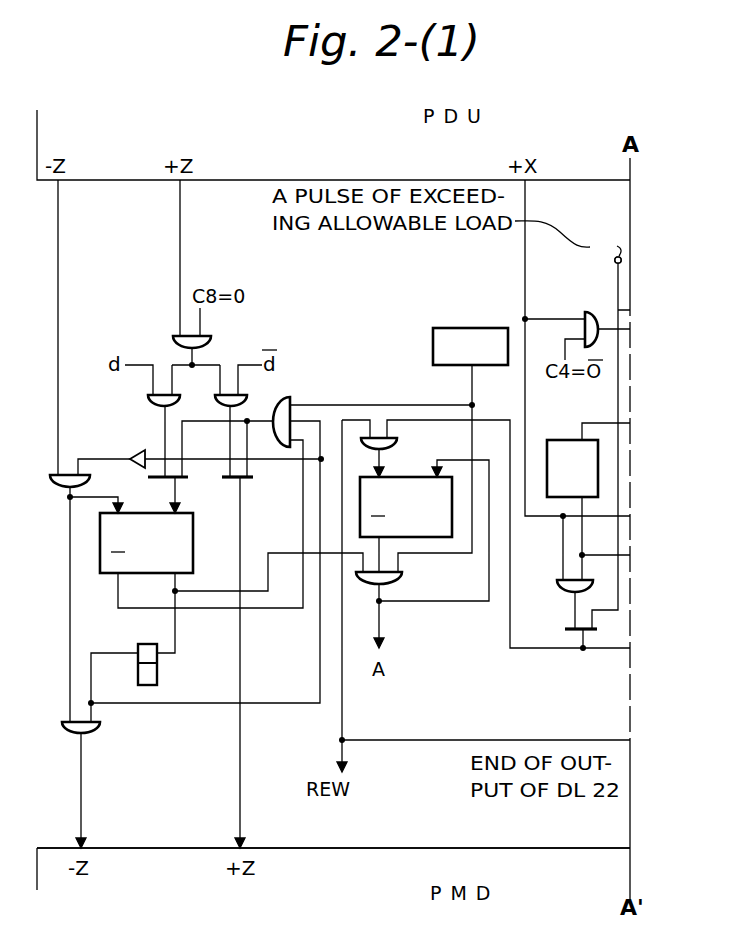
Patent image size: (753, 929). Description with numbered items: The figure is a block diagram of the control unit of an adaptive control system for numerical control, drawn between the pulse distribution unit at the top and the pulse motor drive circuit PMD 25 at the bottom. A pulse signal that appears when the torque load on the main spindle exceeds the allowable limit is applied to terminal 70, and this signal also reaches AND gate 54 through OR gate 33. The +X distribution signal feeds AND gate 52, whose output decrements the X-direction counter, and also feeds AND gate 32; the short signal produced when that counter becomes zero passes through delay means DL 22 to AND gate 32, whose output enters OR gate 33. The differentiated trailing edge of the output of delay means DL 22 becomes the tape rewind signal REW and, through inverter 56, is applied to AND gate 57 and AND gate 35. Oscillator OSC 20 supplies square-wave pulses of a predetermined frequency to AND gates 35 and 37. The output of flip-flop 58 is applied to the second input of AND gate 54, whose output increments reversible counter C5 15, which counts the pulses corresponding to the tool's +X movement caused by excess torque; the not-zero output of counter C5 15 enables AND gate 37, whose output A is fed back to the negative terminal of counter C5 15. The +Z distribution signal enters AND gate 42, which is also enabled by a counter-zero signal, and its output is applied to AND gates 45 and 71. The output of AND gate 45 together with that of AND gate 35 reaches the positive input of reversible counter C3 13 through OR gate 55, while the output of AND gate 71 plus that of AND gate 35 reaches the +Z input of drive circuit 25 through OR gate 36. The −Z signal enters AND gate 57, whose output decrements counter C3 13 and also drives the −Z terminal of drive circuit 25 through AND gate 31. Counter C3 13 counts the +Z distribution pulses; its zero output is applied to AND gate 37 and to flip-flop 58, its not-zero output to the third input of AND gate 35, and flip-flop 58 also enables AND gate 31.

The reversible counter C3 13 is at (193, 515).
The reversible counter C5 15 is at (420, 477).
The square wave oscillator OSC 20 is at (463, 328).
The delay means DL 22 is at (563, 440).
The pulse motor drive circuit PMD 25 is at (497, 848).
The AND gate 31 is at (99, 728).
The AND gate 32 is at (562, 587).
The OR gate 33 is at (569, 633).
The AND gate 35 is at (288, 398).
The OR gate 36 is at (251, 480).
The AND gate 37 is at (402, 574).
The AND gate 42 is at (204, 337).
The AND gate 45 is at (180, 398).
The AND gate 52 is at (585, 318).
The AND gate 54 is at (383, 436).
The OR gate 55 is at (153, 478).
The inverter 56 is at (139, 456).
The AND gate 57 is at (66, 473).
The flip-flop 58 is at (158, 666).
The terminal 70 is at (607, 245).
The AND gate 71 is at (252, 384).